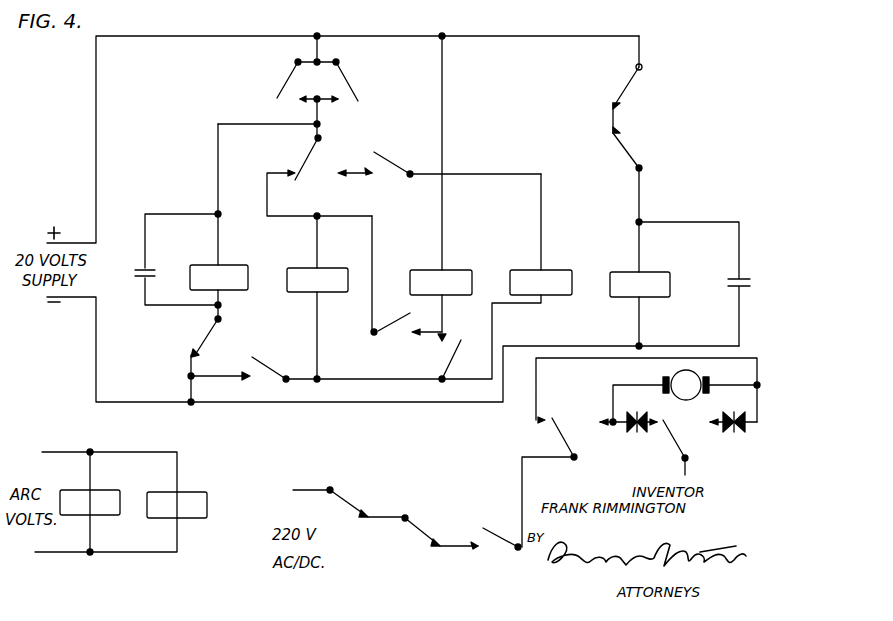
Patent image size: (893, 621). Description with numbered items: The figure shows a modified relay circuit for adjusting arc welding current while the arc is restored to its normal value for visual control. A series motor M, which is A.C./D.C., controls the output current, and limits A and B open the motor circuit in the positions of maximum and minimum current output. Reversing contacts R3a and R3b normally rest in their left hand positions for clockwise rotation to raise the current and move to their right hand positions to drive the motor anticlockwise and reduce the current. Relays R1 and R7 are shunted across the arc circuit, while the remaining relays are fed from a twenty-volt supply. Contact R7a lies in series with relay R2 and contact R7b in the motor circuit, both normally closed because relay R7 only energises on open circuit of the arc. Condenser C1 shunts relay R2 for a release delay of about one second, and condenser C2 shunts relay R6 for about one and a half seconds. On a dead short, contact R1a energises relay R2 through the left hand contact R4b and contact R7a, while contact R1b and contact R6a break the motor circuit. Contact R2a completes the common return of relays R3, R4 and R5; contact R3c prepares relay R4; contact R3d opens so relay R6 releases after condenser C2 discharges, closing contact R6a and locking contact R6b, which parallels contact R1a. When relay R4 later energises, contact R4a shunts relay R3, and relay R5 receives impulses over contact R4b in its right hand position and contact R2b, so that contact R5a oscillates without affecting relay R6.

The contact R1a is at (292, 80).
The contact R6b is at (362, 80).
The contact R4b is at (319, 175).
The contact R2b is at (439, 161).
The contact R3d is at (638, 98).
The contact R5a is at (641, 149).
The condenser C1 is at (176, 259).
The condenser C2 is at (694, 284).
The contact R7a is at (219, 362).
The contact R2a is at (274, 369).
The contact R3c is at (390, 286).
The contact R4a is at (461, 361).
The contact R3a is at (564, 482).
The contact R3b is at (691, 447).
The limit A is at (628, 411).
The limit B is at (733, 411).
The series motor M is at (686, 385).
The contact R1b is at (366, 501).
The contact R7b is at (428, 532).
The contact R6a is at (498, 549).